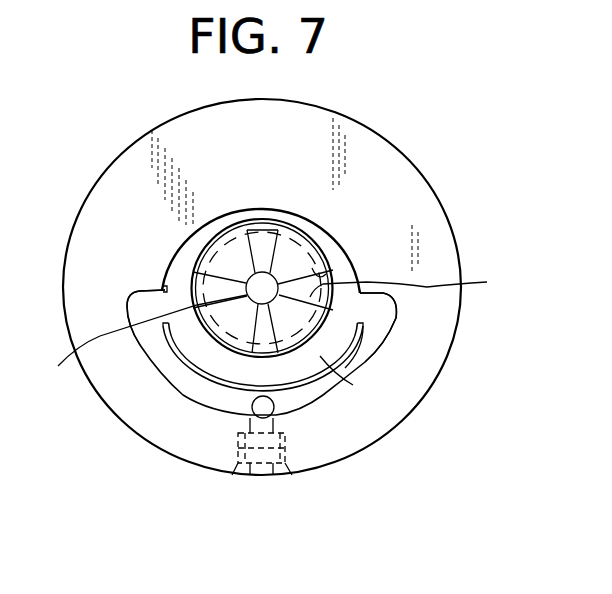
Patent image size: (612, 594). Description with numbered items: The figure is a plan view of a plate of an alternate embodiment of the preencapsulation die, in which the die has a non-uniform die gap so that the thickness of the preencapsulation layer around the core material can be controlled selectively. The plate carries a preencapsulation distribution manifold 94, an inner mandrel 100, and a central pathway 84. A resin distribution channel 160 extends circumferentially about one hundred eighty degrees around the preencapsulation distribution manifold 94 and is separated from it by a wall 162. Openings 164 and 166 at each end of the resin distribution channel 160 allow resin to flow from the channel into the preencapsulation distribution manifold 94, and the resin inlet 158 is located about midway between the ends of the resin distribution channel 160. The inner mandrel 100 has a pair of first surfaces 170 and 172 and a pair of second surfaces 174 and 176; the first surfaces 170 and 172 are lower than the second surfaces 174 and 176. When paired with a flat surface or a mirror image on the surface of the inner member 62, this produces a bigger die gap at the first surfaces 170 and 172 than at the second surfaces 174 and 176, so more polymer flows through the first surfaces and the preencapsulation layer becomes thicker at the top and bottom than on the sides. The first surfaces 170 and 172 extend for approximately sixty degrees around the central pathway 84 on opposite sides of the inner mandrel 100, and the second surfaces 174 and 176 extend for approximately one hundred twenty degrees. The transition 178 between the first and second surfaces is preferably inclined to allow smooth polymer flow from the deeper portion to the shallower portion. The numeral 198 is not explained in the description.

The inner member 62 is at (110, 200).
The central pathway 84 is at (150, 335).
The preencapsulation distribution manifold 94 is at (292, 208).
The inner mandrel 100 is at (292, 253).
The resin inlet 158 is at (253, 406).
The resin distribution channel 160 is at (390, 433).
The wall 162 is at (366, 338).
The opening 164 is at (133, 300).
The opening 166 is at (387, 303).
The first surface 170 is at (177, 380).
The first surface 172 is at (263, 243).
The second surface 174 is at (142, 345).
The second surface 176 is at (353, 385).
The transition 178 is at (125, 308).
The bearing race 198 is at (320, 275).